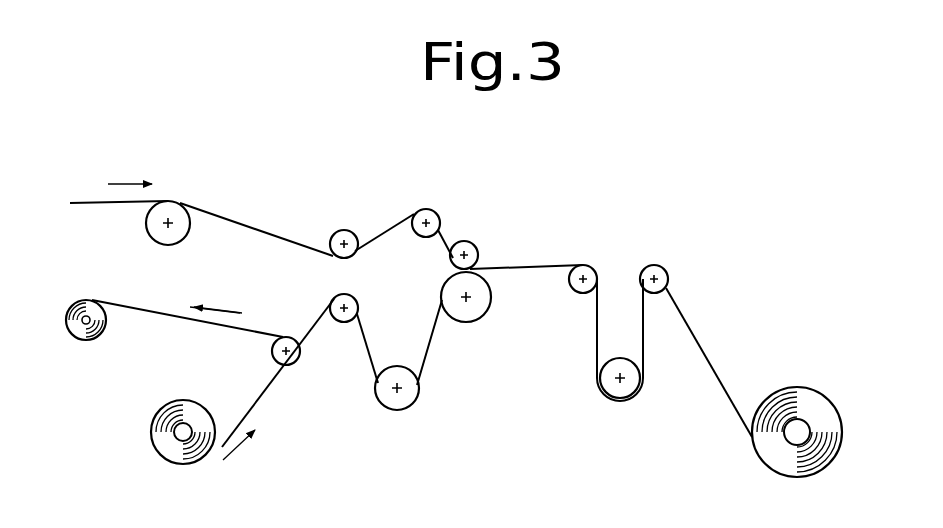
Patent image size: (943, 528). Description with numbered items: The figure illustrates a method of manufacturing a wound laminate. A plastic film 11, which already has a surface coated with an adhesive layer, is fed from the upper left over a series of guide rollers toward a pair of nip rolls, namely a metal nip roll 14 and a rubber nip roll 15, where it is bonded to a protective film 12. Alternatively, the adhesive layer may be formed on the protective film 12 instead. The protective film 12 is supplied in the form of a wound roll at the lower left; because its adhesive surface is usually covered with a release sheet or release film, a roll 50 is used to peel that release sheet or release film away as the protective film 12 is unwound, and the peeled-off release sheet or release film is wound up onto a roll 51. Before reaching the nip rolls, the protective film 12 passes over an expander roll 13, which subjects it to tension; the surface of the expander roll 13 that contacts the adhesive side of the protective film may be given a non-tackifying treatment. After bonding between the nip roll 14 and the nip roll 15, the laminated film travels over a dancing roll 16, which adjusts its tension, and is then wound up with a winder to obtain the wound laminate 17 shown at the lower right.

The plastic film 11 is at (78, 185).
The protective film 12 is at (205, 470).
The expander roll 13 is at (415, 420).
The nip roll 14 is at (475, 226).
The nip roll 15 is at (478, 340).
The dancing roll 16 is at (619, 408).
The wound laminate 17 is at (818, 376).
The roll 50 is at (303, 367).
The roll of peeled off release sheet or release film 51 is at (80, 348).